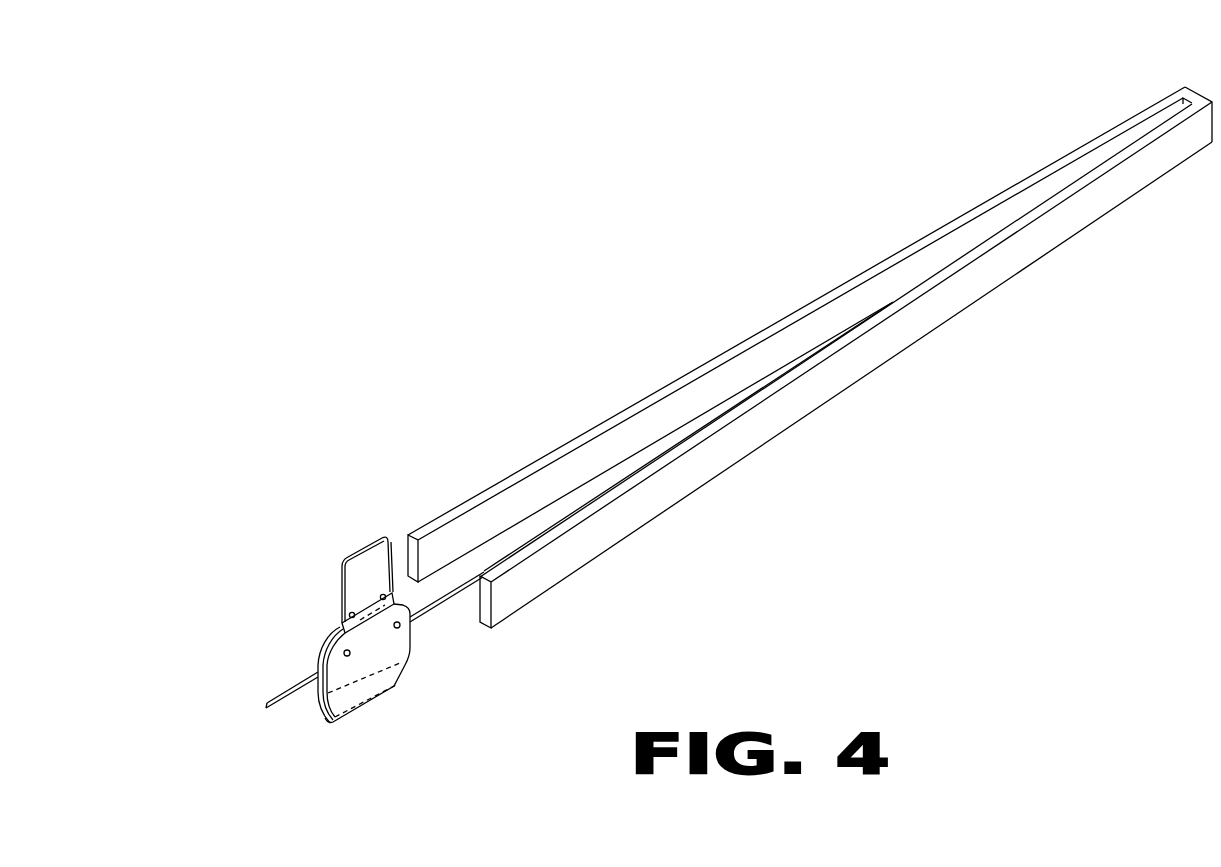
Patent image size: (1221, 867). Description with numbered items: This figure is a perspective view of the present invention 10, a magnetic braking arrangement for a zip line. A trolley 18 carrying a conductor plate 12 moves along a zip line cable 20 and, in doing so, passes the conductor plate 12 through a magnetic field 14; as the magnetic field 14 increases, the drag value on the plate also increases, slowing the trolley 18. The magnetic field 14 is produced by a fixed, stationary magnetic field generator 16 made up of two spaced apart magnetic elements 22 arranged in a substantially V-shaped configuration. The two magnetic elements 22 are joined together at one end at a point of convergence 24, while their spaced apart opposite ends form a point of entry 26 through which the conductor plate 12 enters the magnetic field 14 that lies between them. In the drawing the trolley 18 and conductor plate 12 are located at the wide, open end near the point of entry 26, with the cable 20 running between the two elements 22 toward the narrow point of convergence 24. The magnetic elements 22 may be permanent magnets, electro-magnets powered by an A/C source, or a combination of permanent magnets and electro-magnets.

The present invention 10 is at (343, 154).
The conductor plate 12 is at (370, 563).
The magnetic field 14 is at (770, 383).
The magnetic field generator 16 is at (793, 287).
The trolley 18 is at (352, 647).
The zip line cable 20 is at (424, 616).
The magnetic elements 22 is at (572, 440).
The point of convergence 24 is at (1193, 100).
The point of entry 26 is at (485, 573).